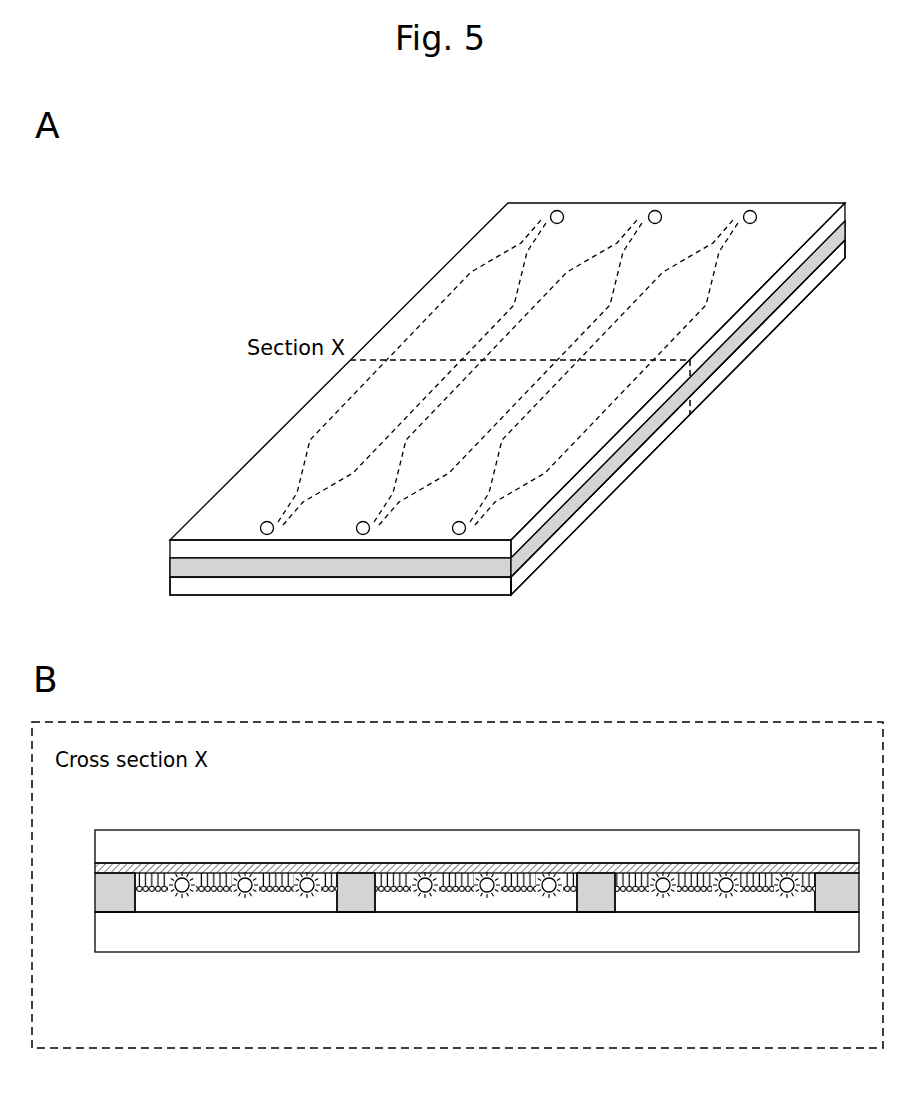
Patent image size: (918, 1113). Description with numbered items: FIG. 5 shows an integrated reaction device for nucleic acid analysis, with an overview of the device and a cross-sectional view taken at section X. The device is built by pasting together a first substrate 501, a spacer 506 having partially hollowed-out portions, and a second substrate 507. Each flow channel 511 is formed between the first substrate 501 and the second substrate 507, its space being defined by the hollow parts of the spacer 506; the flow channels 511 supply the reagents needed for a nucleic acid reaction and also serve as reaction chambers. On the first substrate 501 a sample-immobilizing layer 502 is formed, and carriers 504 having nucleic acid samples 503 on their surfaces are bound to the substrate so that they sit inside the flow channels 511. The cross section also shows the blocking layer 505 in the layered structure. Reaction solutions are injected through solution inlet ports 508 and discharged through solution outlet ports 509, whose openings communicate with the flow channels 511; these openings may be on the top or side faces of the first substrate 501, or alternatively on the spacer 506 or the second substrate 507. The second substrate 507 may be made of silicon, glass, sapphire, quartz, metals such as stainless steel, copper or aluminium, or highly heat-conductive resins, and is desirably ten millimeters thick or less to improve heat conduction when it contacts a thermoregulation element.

The first substrate 501 is at (265, 488).
The sample-immobilizing layer 502 is at (465, 863).
The nucleic acid sample 503 is at (312, 905).
The carrier 504 is at (176, 898).
The blocking layer 505 is at (277, 863).
The spacer 506 is at (180, 567).
The second substrate 507 is at (245, 588).
The solution inlet port 508 is at (463, 532).
The solution outlet port 509 is at (553, 211).
The flow channel 511 is at (603, 412).